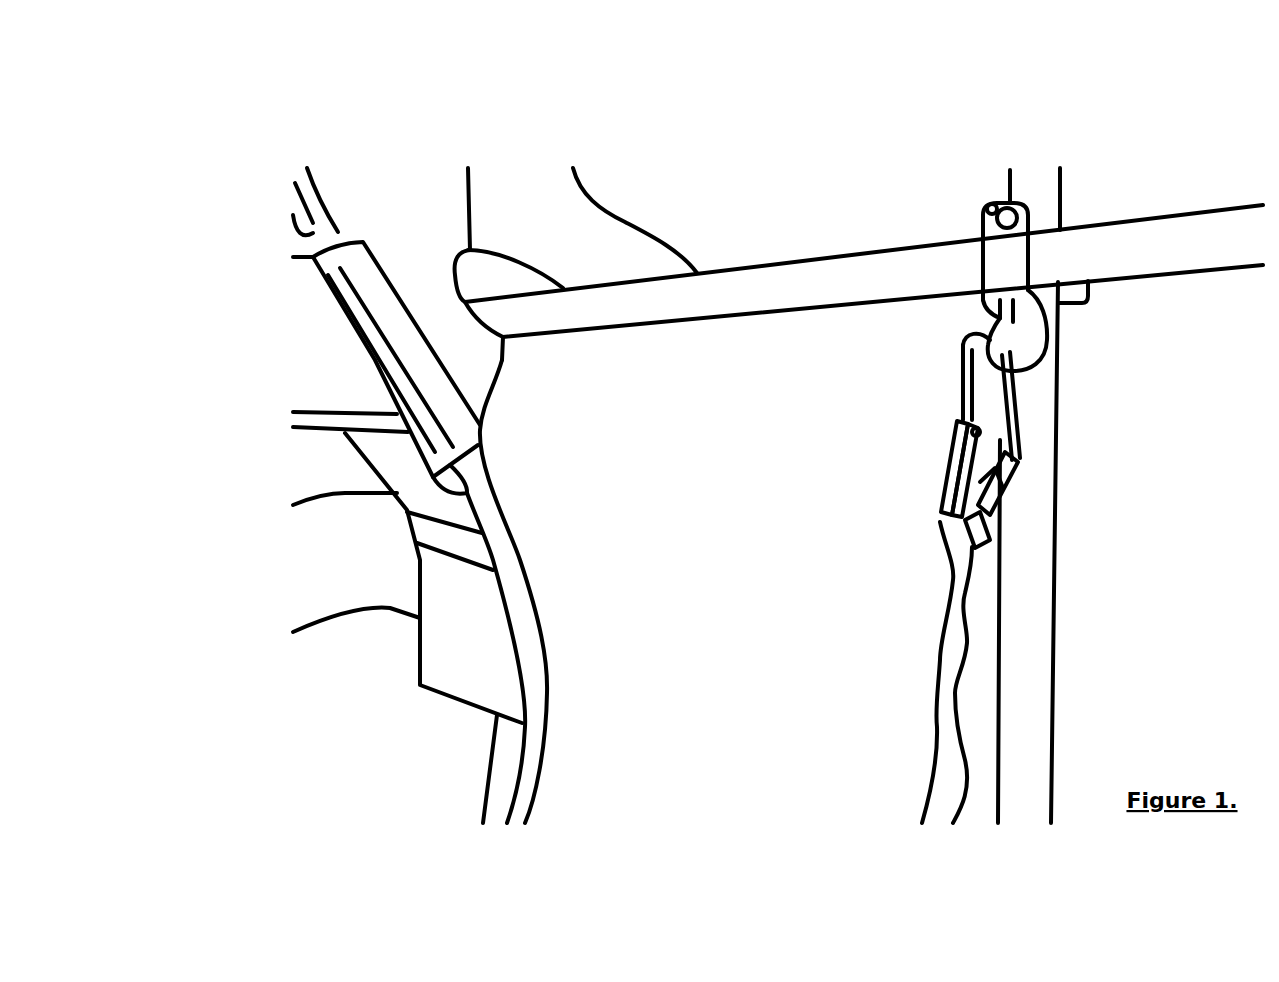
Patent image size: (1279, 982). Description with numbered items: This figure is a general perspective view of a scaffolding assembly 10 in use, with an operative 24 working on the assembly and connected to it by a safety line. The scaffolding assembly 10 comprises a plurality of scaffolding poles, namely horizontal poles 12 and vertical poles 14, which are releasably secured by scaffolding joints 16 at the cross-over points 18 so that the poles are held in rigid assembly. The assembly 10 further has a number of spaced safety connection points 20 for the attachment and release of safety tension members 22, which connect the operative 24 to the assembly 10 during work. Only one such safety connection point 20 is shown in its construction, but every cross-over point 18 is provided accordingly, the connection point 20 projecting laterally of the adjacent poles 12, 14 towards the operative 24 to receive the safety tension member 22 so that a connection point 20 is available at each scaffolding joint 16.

The scaffolding assembly 10 is at (969, 494).
The horizontal pole 12 is at (1248, 243).
The vertical pole 14 is at (1038, 169).
The scaffolding joint 16 is at (1073, 205).
The cross-over point 18 is at (967, 207).
The safety connection point 20 is at (967, 333).
The safety tension member 22 is at (950, 668).
The operative 24 is at (365, 385).